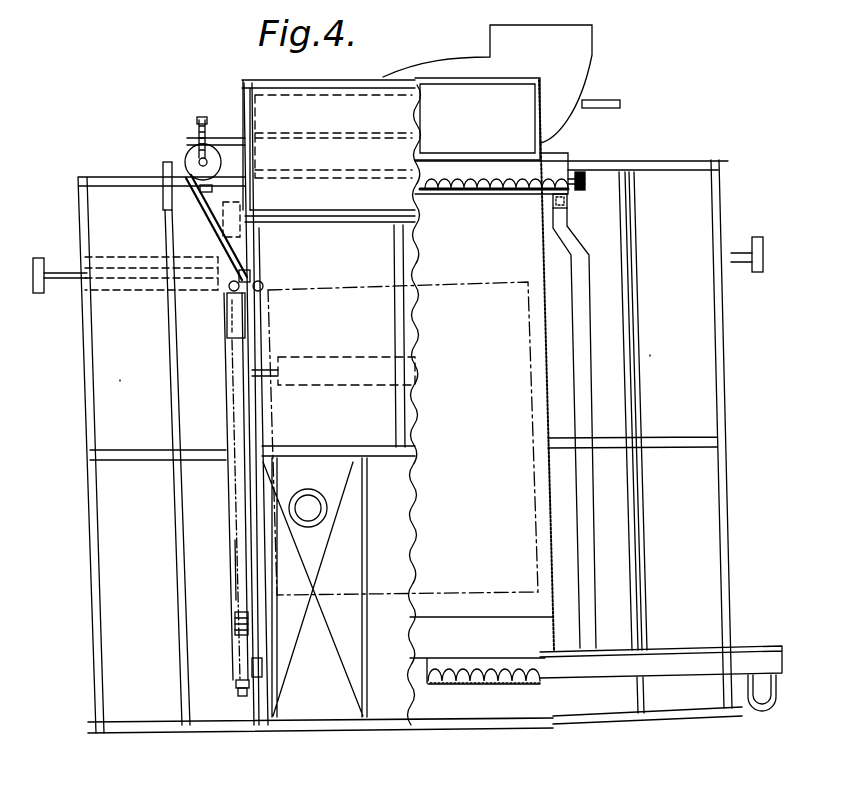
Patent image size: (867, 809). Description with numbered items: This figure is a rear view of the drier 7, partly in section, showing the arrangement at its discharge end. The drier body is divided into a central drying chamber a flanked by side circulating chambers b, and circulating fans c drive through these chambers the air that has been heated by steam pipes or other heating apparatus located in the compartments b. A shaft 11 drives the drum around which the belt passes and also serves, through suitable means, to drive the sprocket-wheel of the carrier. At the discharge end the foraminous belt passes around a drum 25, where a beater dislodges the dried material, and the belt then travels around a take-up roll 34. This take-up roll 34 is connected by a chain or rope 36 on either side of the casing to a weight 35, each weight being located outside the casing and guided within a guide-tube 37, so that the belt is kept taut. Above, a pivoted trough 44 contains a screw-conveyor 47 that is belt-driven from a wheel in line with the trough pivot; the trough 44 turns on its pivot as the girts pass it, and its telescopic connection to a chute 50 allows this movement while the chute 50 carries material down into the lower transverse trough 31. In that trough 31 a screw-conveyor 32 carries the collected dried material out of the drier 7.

The drier 7 is at (398, 379).
The shaft 11 is at (208, 163).
The drum 25 is at (328, 145).
The transverse trough 31 is at (466, 684).
The screw-conveyor 32 is at (479, 663).
The take-up roll 34 is at (333, 371).
The weight 35 is at (238, 628).
The chain or rope 36 is at (268, 330).
The guide-tube 37 is at (236, 556).
The trough 44 is at (514, 191).
The screw-conveyor 47 is at (466, 191).
The chute 50 is at (568, 217).
The central drying chamber a is at (403, 438).
The side circulating chambers b is at (394, 351).
The circulating fans c is at (228, 232).